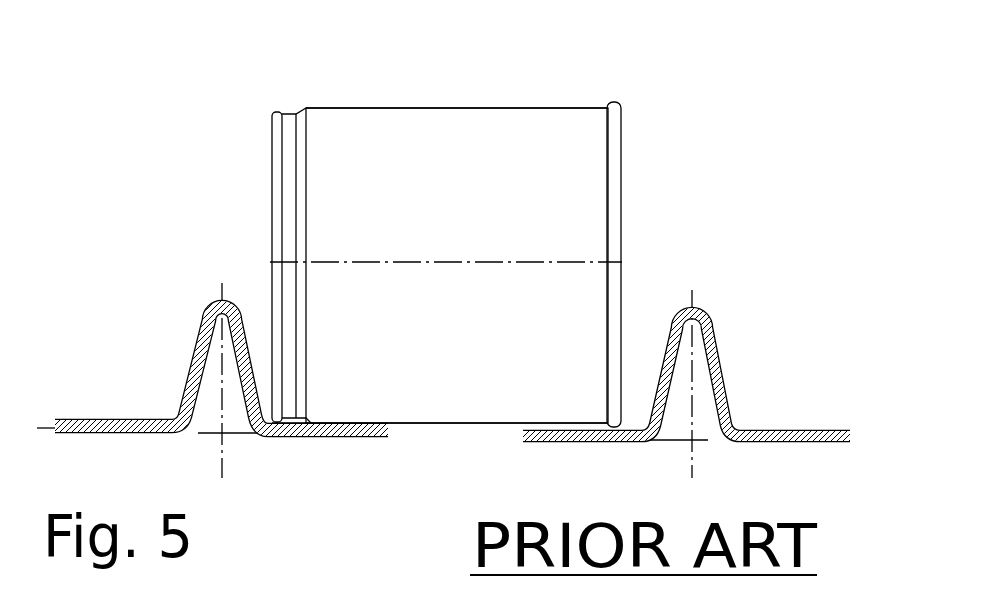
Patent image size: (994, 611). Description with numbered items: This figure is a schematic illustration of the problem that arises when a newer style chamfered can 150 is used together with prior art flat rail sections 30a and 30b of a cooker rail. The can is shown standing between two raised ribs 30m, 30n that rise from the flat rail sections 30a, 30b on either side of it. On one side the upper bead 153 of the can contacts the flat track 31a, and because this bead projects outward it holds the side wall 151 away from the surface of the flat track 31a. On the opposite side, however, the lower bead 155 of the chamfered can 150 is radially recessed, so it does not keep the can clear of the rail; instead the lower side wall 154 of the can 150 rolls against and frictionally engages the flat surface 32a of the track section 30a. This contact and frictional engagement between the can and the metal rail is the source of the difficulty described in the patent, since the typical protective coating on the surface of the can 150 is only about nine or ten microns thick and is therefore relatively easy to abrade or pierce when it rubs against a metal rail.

The chamfered can 150 is at (495, 257).
The side wall 151 is at (493, 427).
The upper bead 153 is at (618, 102).
The lower side wall 154 is at (332, 107).
The lower bead 155 is at (275, 112).
The flat rail section 30a is at (323, 436).
The flat rail section 30b is at (608, 436).
The left rib 30m is at (232, 291).
The right rib 30n is at (710, 311).
The flat track 31a is at (645, 433).
The flat surface 32a is at (291, 427).